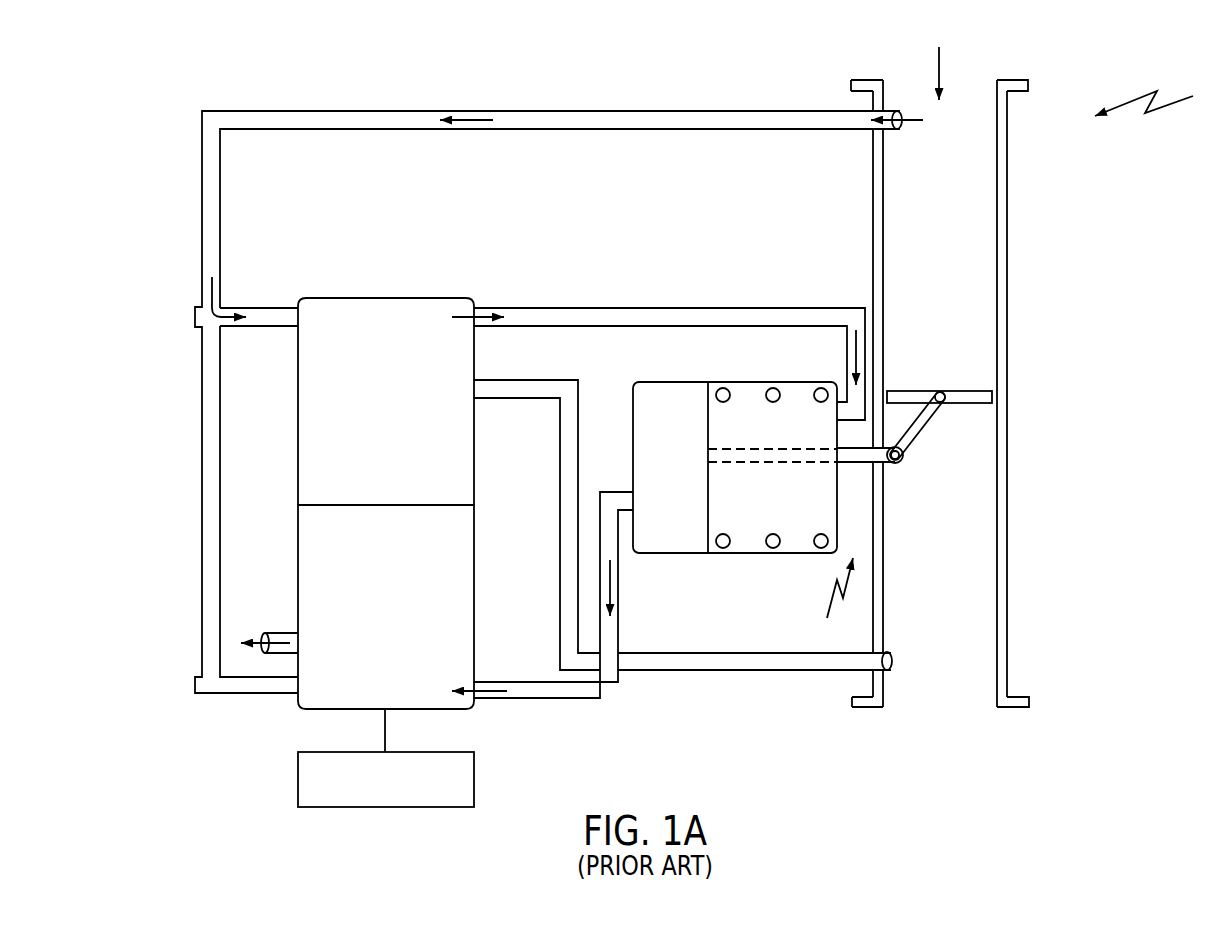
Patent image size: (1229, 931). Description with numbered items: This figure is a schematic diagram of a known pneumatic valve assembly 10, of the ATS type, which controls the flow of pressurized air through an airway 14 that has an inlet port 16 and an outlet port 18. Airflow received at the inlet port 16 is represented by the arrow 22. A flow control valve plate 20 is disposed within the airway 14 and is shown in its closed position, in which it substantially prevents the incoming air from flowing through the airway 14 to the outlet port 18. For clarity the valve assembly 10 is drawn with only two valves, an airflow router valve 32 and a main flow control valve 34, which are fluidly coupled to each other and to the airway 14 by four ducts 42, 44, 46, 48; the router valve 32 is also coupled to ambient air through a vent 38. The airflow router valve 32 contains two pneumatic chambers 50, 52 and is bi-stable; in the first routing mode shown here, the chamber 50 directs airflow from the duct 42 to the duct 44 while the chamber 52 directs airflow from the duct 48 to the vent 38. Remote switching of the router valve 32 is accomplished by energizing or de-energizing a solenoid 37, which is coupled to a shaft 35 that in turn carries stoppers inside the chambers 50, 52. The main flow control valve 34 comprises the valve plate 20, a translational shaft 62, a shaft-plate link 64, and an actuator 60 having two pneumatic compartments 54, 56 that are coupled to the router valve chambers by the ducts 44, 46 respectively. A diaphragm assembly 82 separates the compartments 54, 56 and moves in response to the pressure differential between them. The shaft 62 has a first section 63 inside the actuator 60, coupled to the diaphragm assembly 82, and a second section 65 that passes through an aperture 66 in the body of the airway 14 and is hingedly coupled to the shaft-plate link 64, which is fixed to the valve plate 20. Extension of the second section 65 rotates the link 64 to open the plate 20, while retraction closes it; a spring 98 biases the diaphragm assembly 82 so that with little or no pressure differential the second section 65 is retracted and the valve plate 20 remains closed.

The valve assembly 10 is at (1160, 96).
The airway 14 is at (925, 258).
The inlet port 16 is at (982, 84).
The outlet port 18 is at (890, 707).
The flow control valve plate 20 is at (970, 390).
The arrow 22 is at (939, 58).
The airflow router valve 32 is at (386, 478).
The main flow control valve 34 is at (830, 603).
The shaft 35 is at (385, 740).
The solenoid 37 is at (298, 783).
The vent 38 is at (278, 632).
The duct 42 is at (559, 110).
The duct 44 is at (647, 307).
The duct 46 is at (753, 652).
The duct 48 is at (540, 699).
The pneumatic chamber 50 is at (377, 422).
The pneumatic chamber 52 is at (372, 613).
The pneumatic compartment 54 is at (737, 438).
The pneumatic compartment 56 is at (655, 537).
The actuator 60 is at (735, 464).
The translational shaft 62 is at (862, 466).
The first section 63 is at (708, 455).
The shaft-plate link 64 is at (928, 426).
The second section 65 is at (899, 465).
The aperture 66 is at (890, 440).
The diaphragm assembly 82 is at (710, 503).
The spring 98 is at (723, 548).